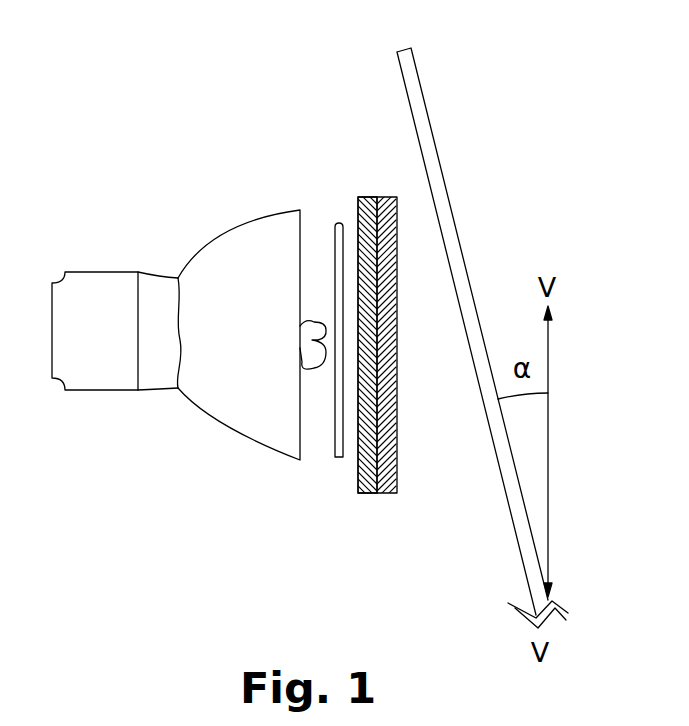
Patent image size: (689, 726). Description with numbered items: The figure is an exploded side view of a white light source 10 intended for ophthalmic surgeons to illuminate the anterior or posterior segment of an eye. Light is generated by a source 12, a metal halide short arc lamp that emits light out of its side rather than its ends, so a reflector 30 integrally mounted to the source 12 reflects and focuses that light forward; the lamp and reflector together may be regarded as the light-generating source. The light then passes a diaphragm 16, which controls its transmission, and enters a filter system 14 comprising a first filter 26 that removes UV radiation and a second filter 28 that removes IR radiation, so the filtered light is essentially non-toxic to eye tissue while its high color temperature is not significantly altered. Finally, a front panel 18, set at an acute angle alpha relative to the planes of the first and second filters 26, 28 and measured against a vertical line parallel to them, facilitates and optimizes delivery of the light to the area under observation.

The white light source 10 is at (153, 88).
The source 12 is at (314, 318).
The filter system 14 is at (370, 546).
The diaphragm 16 is at (337, 456).
The front panel 18 is at (472, 297).
The first filter 26 is at (385, 197).
The second filter 28 is at (365, 197).
The reflector 30 is at (195, 278).